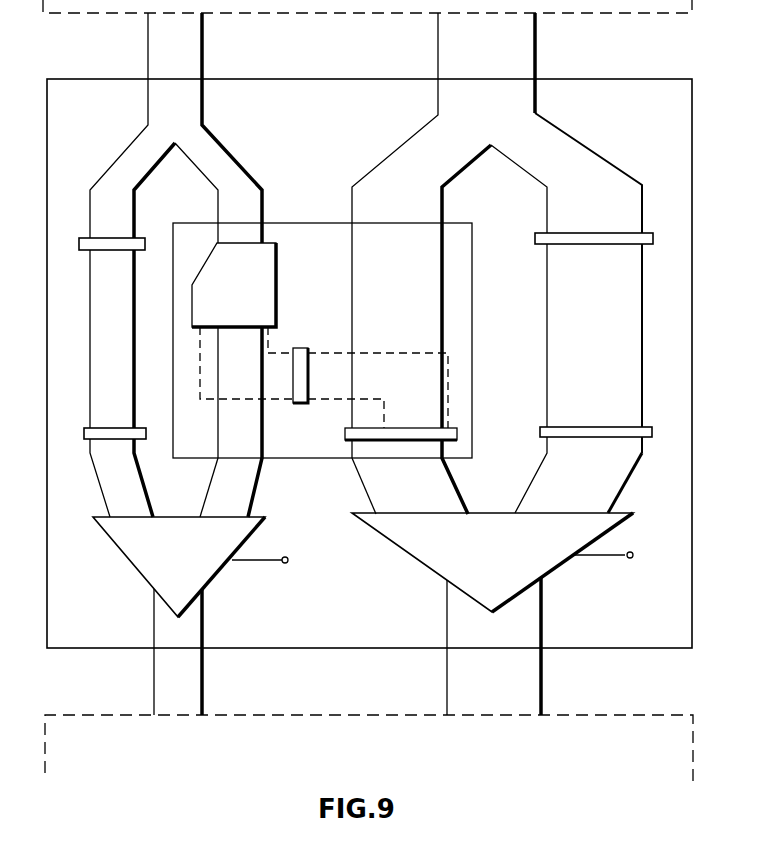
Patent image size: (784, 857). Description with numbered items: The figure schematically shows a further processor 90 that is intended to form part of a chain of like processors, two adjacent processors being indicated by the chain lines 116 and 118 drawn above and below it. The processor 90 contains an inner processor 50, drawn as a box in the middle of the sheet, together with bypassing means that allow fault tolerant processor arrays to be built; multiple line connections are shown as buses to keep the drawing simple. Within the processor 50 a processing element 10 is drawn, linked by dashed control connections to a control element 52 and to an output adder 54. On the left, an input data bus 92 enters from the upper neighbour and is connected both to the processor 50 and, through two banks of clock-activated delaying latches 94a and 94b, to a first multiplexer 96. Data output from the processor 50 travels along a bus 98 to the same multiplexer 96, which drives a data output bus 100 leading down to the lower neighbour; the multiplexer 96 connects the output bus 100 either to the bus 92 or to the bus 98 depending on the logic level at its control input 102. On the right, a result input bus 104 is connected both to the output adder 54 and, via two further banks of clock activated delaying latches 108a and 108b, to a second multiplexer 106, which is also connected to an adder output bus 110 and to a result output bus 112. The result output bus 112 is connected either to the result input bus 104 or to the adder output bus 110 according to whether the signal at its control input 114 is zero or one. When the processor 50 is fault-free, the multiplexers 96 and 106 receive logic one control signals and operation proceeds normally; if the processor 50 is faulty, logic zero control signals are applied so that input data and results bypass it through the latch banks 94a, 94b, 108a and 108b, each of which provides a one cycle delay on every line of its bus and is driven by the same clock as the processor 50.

The processing element 10 is at (276, 289).
The processor 50 is at (305, 222).
The control element 52 is at (298, 404).
The output adder 54 is at (345, 437).
The processor 90 is at (47, 282).
The input data bus 92 is at (203, 97).
The clock-activated delaying latches 94a is at (80, 237).
The clock-activated delaying latches 94b is at (86, 441).
The first multiplexer 96 is at (213, 577).
The bus 98 is at (254, 488).
The data output bus 100 is at (203, 680).
The control input 102 is at (288, 563).
The result input bus 104 is at (537, 97).
The second multiplexer 106 is at (558, 568).
The clock activated delaying latches 108a is at (653, 236).
The clock activated delaying latches 108b is at (653, 428).
The adder output bus 110 is at (365, 492).
The result output bus 112 is at (446, 672).
The control input 114 is at (633, 558).
The chain line 116 is at (107, 15).
The chain line 118 is at (108, 713).